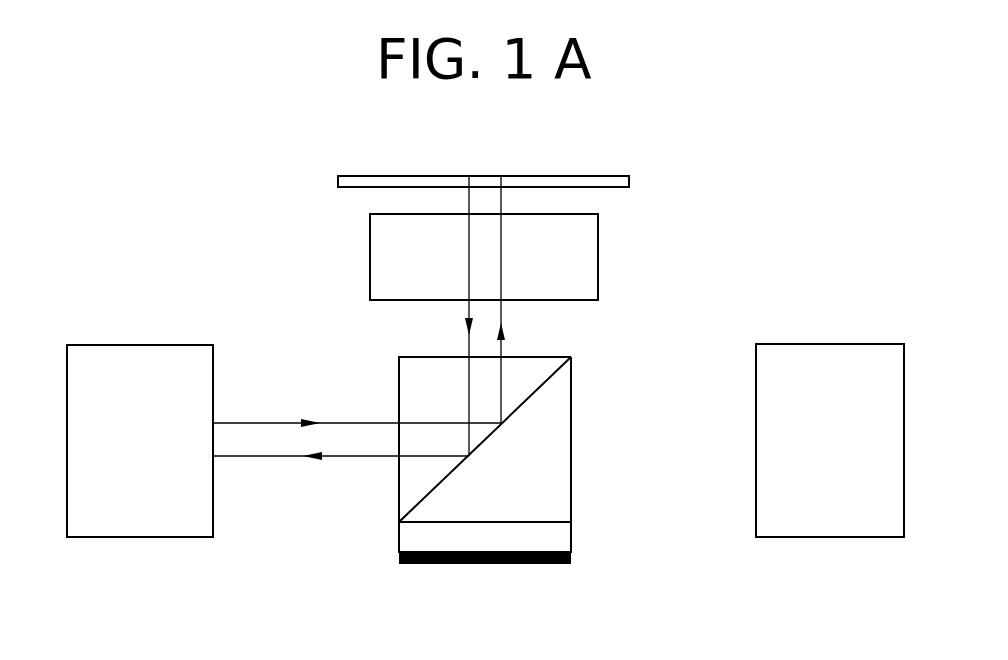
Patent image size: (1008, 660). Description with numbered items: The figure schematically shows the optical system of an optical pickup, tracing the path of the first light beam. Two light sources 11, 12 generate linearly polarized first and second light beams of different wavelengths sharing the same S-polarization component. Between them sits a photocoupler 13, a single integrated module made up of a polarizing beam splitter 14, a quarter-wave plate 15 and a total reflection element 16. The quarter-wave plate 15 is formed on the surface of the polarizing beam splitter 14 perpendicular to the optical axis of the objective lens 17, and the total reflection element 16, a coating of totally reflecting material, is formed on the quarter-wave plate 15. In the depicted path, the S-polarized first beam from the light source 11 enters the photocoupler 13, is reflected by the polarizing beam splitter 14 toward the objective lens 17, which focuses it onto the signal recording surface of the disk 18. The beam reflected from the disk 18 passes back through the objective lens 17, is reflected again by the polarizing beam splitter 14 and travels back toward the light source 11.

The light source 11 is at (143, 345).
The light source 12 is at (832, 344).
The photocoupler 13 is at (396, 392).
The polarizing beam splitter 14 is at (571, 440).
The quarter-wave plate 15 is at (571, 538).
The total reflection element 16 is at (485, 565).
The objective lens 17 is at (598, 256).
The disk 18 is at (575, 175).